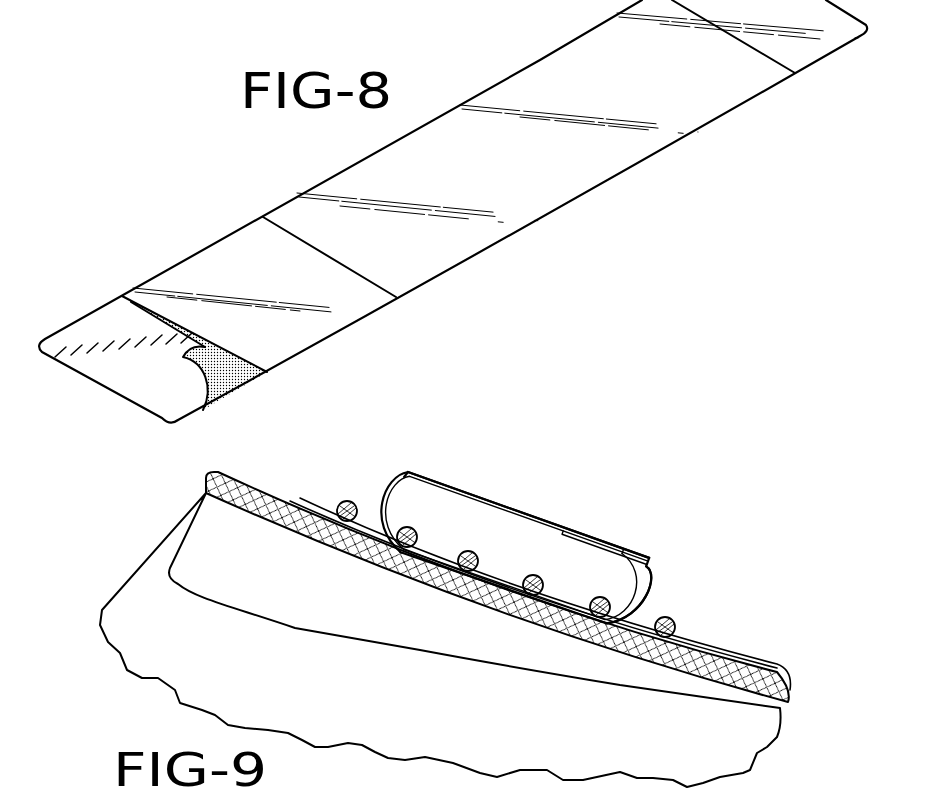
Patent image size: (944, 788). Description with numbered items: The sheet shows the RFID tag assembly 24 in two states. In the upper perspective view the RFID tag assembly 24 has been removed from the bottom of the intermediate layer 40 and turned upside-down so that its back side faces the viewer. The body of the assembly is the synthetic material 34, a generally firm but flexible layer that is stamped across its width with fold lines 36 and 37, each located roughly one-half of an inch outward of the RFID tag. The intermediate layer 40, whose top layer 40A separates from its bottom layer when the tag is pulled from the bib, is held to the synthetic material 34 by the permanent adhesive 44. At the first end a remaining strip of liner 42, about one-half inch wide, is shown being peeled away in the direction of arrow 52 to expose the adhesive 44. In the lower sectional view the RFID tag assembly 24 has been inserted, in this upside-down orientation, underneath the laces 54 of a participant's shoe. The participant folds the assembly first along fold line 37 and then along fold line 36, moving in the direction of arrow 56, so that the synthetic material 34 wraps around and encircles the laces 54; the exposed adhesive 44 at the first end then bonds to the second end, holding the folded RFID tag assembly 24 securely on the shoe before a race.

In FIG. 8, the RFID tag assembly 24 is at (613, 193).
In FIG. 9, the RFID tag assembly 24 is at (522, 492).
In FIG. 9, the synthetic material 34 is at (469, 490).
In FIG. 8, the fold line 36 is at (330, 252).
In FIG. 9, the fold line 36 is at (404, 470).
In FIG. 8, the fold line 37 is at (757, 54).
In FIG. 9, the fold line 37 is at (652, 566).
In FIG. 8, the intermediate layer 40 is at (550, 60).
In FIG. 8, the top layer 40A is at (385, 178).
In FIG. 8, the liner 42 is at (110, 318).
In FIG. 8, the permanent adhesive 44 is at (232, 377).
In FIG. 9, the permanent adhesive 44 is at (649, 592).
In FIG. 8, the arrow 52 is at (248, 313).
In FIG. 9, the laces 54 is at (409, 528).
In FIG. 9, the arrow 56 is at (618, 512).